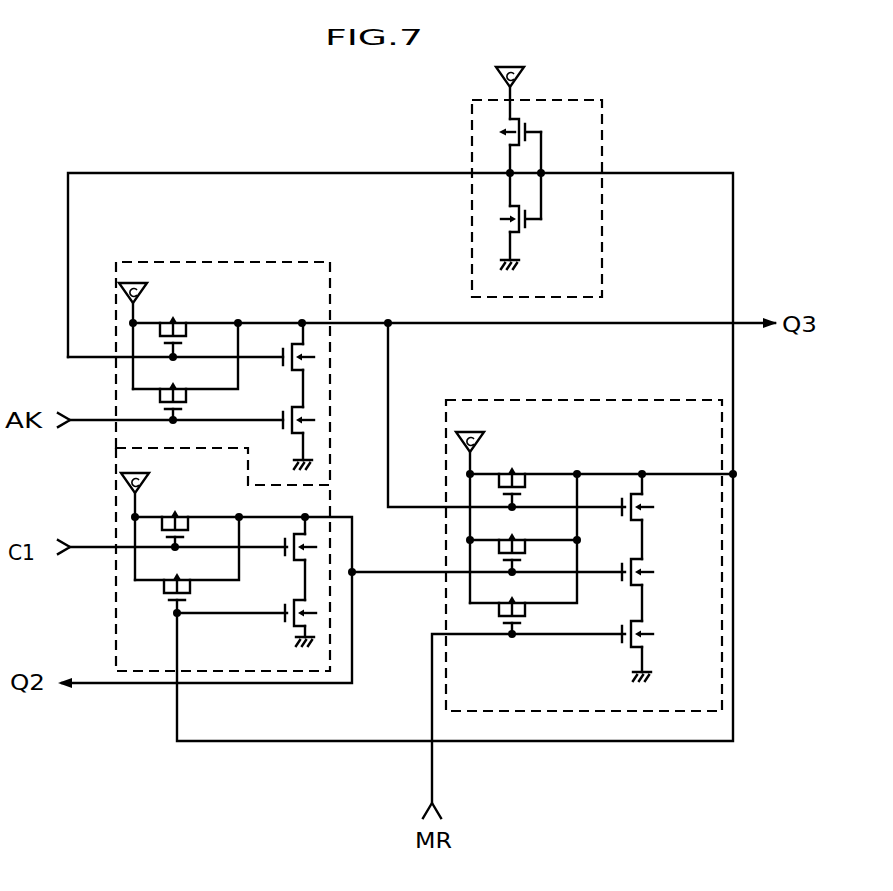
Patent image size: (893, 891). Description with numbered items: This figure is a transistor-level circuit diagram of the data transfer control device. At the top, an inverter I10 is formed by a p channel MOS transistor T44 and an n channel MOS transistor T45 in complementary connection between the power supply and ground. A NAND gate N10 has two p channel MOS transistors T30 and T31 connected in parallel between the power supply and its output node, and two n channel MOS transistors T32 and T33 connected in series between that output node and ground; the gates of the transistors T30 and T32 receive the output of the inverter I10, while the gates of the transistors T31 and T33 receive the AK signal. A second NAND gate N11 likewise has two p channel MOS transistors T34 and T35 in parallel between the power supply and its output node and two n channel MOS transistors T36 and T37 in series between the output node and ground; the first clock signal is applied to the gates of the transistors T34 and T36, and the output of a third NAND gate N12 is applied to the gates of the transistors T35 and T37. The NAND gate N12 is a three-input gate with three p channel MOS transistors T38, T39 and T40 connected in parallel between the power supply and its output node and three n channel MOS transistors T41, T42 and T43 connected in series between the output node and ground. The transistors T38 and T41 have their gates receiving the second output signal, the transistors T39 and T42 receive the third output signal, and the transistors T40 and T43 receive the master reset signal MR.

The inverter I10 is at (604, 128).
The NAND gate N10 is at (270, 259).
The NAND gate N11 is at (116, 614).
The NAND gate N12 is at (614, 399).
The p channel MOS transistor T30 is at (196, 336).
The p channel MOS transistor T31 is at (185, 372).
The n channel MOS transistor T32 is at (280, 365).
The n channel MOS transistor T33 is at (286, 423).
The p channel MOS transistor T34 is at (196, 528).
The p channel MOS transistor T35 is at (187, 565).
The n channel MOS transistor T36 is at (283, 558).
The n channel MOS transistor T37 is at (288, 607).
The p channel MOS transistor T38 is at (531, 487).
The p channel MOS transistor T39 is at (523, 552).
The p channel MOS transistor T40 is at (523, 554).
The n channel MOS transistor T41 is at (654, 516).
The n channel MOS transistor T42 is at (656, 590).
The n channel MOS transistor T43 is at (656, 646).
The p channel MOS transistor T44 is at (541, 144).
The n channel MOS transistor T45 is at (542, 202).